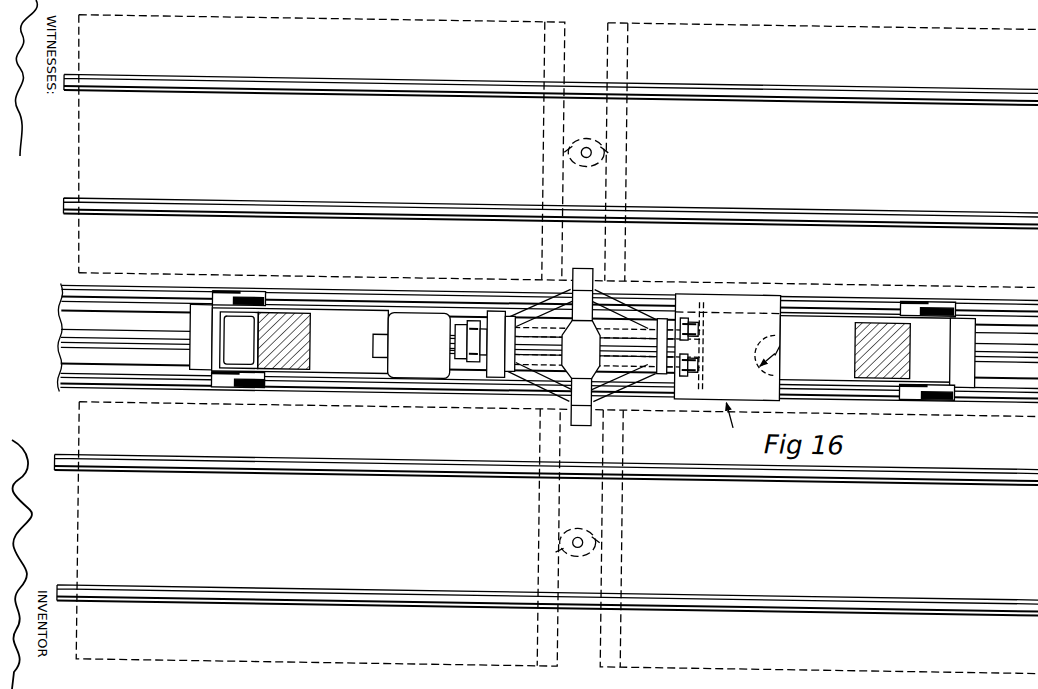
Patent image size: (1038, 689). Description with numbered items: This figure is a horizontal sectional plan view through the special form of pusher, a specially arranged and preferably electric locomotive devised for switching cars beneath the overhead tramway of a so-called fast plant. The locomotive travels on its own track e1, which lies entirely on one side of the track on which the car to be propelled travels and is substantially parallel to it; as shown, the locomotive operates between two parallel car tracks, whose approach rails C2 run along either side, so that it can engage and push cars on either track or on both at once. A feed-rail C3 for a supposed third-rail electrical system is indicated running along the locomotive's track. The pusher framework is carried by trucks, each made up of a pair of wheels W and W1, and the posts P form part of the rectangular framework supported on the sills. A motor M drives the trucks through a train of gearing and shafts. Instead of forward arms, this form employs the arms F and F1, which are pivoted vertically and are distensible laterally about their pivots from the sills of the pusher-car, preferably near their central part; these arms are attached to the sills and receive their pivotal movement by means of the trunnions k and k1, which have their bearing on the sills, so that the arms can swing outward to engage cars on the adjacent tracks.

The approach track rails C2 is at (267, 96).
The feed-rail C3 is at (56, 345).
The pusher track e1 is at (331, 304).
The wheel W is at (248, 298).
The wheel W1 is at (925, 297).
The post P is at (927, 365).
The motor M is at (412, 345).
The trunnion k is at (494, 329).
The trunnion k1 is at (666, 328).
The arm F is at (583, 426).
The arm F1 is at (580, 279).